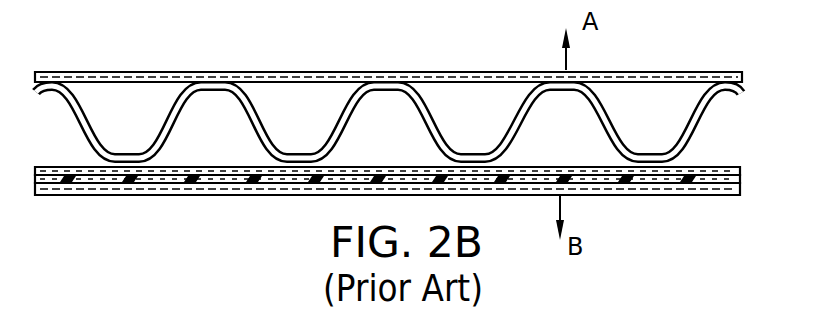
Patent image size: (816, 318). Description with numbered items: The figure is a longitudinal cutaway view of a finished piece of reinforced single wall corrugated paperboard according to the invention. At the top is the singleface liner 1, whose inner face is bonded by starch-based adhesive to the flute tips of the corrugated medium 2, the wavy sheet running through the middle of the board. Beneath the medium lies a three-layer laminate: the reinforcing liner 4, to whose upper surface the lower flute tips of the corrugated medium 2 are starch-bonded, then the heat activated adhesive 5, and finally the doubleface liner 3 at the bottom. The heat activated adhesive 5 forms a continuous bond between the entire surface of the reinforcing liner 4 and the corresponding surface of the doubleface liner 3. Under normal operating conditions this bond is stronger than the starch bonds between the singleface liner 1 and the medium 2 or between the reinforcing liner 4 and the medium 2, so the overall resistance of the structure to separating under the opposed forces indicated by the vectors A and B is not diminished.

The singleface liner 1 is at (709, 72).
The corrugated medium 2 is at (703, 115).
The doubleface liner 3 is at (703, 195).
The reinforcing liner 4 is at (727, 167).
The heat activated adhesive 5 is at (740, 180).